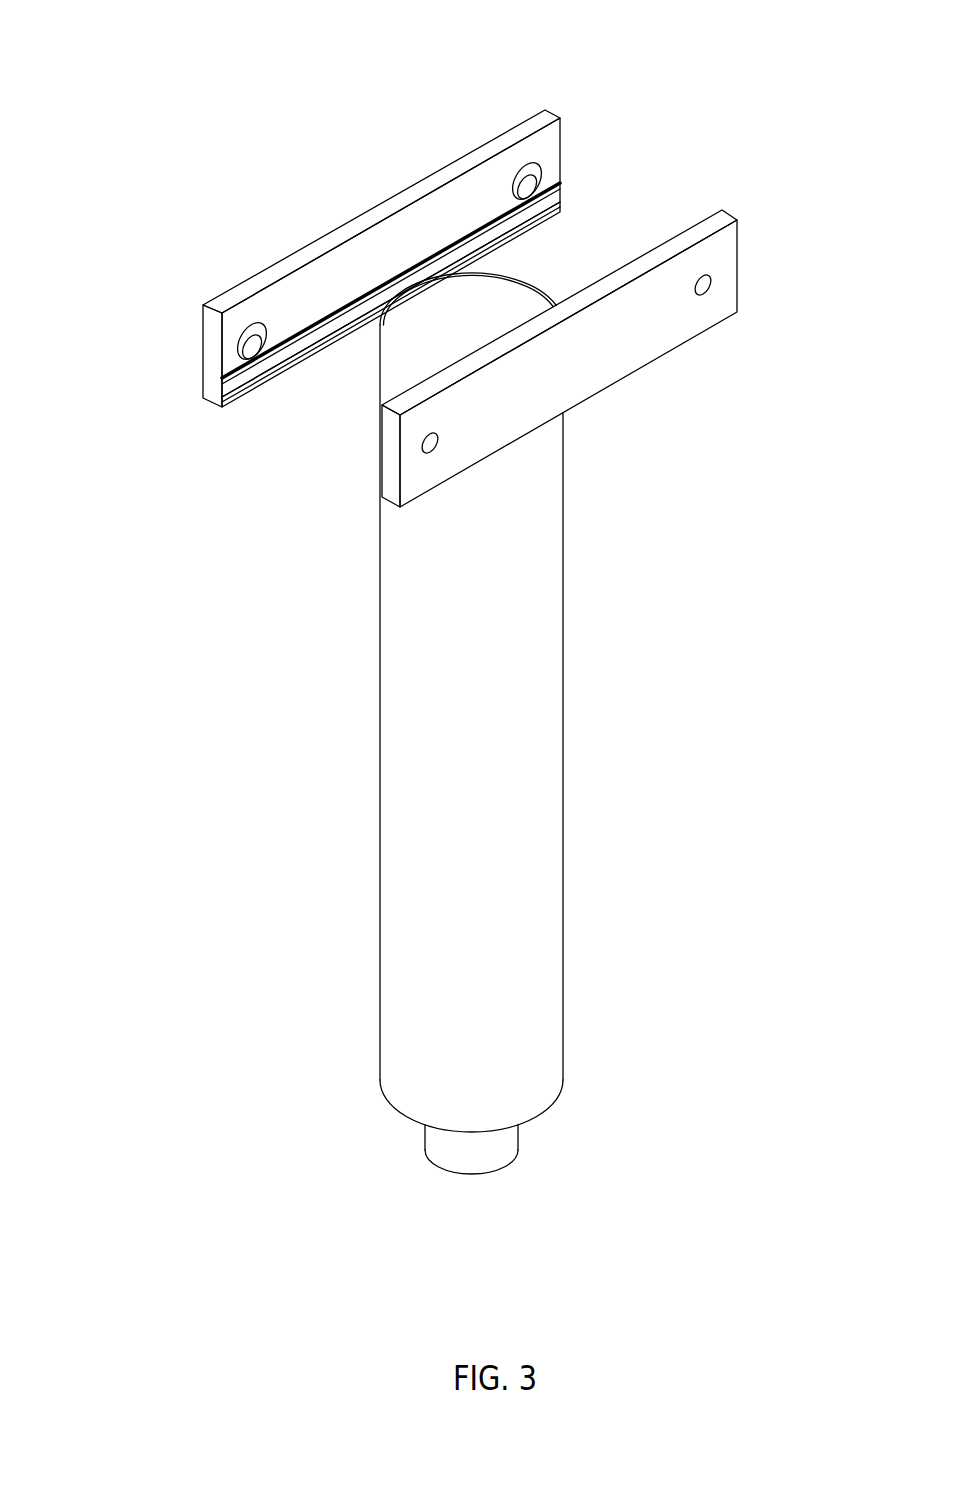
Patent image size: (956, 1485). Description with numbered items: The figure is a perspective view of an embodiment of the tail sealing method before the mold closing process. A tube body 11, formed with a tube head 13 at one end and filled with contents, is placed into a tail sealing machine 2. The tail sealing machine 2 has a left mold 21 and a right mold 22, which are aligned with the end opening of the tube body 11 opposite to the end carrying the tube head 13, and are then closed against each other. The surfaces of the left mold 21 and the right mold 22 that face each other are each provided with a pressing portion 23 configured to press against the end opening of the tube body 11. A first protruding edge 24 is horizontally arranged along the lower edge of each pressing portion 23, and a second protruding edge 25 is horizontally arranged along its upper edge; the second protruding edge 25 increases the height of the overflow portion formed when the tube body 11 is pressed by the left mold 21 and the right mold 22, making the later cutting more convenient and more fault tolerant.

The tail sealing machine 2 is at (440, 264).
The tube body 11 is at (582, 702).
The tube head 13 is at (580, 1184).
The left mold 21 is at (369, 269).
The right mold 22 is at (574, 313).
The pressing portion 23 is at (320, 311).
The first protruding edge 24 is at (329, 361).
The second protruding edge 25 is at (321, 280).